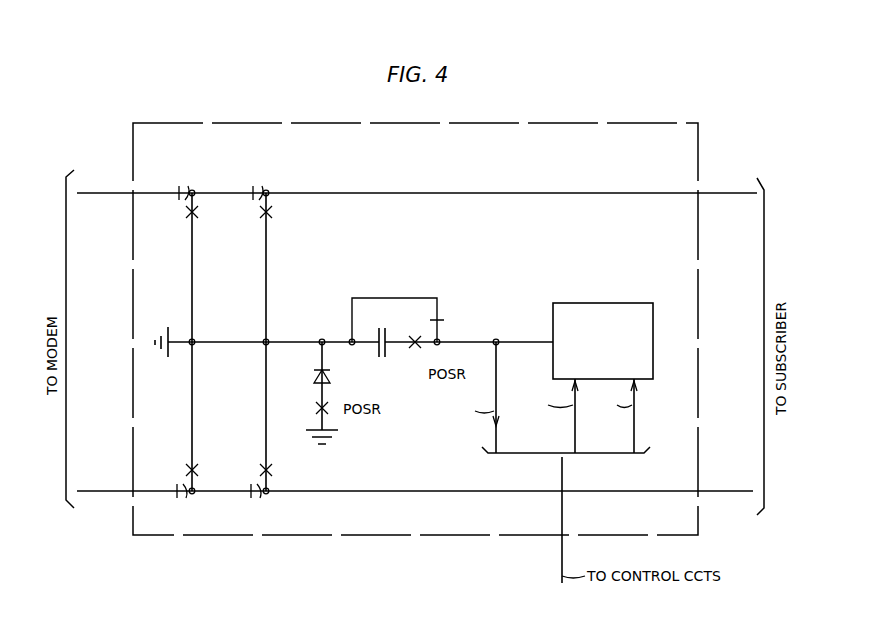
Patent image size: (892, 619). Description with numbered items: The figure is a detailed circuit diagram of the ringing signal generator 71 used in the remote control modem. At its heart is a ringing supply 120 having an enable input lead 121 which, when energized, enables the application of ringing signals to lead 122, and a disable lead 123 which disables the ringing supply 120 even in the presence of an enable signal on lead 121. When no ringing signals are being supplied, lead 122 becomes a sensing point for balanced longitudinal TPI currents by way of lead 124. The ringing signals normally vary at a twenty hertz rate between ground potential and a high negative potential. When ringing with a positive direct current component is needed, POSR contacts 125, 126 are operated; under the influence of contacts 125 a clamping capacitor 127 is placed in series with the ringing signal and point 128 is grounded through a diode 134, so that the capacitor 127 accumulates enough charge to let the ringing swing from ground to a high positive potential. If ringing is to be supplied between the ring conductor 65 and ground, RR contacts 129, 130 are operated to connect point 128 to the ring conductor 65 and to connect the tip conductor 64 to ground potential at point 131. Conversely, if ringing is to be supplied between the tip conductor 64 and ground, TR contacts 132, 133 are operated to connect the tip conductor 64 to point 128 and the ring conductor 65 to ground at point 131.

The ringing signal generator 71 is at (630, 123).
The tip conductor 64 is at (737, 197).
The ring conductor 65 is at (707, 495).
The RR contact 130 is at (190, 188).
The TR contact 132 is at (264, 188).
The TR contact 133 is at (188, 497).
The RR contact 129 is at (265, 497).
The ground point 131 is at (194, 341).
The point 128 is at (264, 345).
The diode 134 is at (312, 381).
The POSR contact 126 is at (312, 409).
The clamping capacitor 127 is at (380, 357).
The POSR contact 125 is at (425, 336).
The lead 122 is at (463, 342).
The ringing supply 120 is at (591, 303).
The sensing lead 124 is at (494, 440).
The disable lead 123 is at (573, 440).
The enable input lead 121 is at (632, 440).